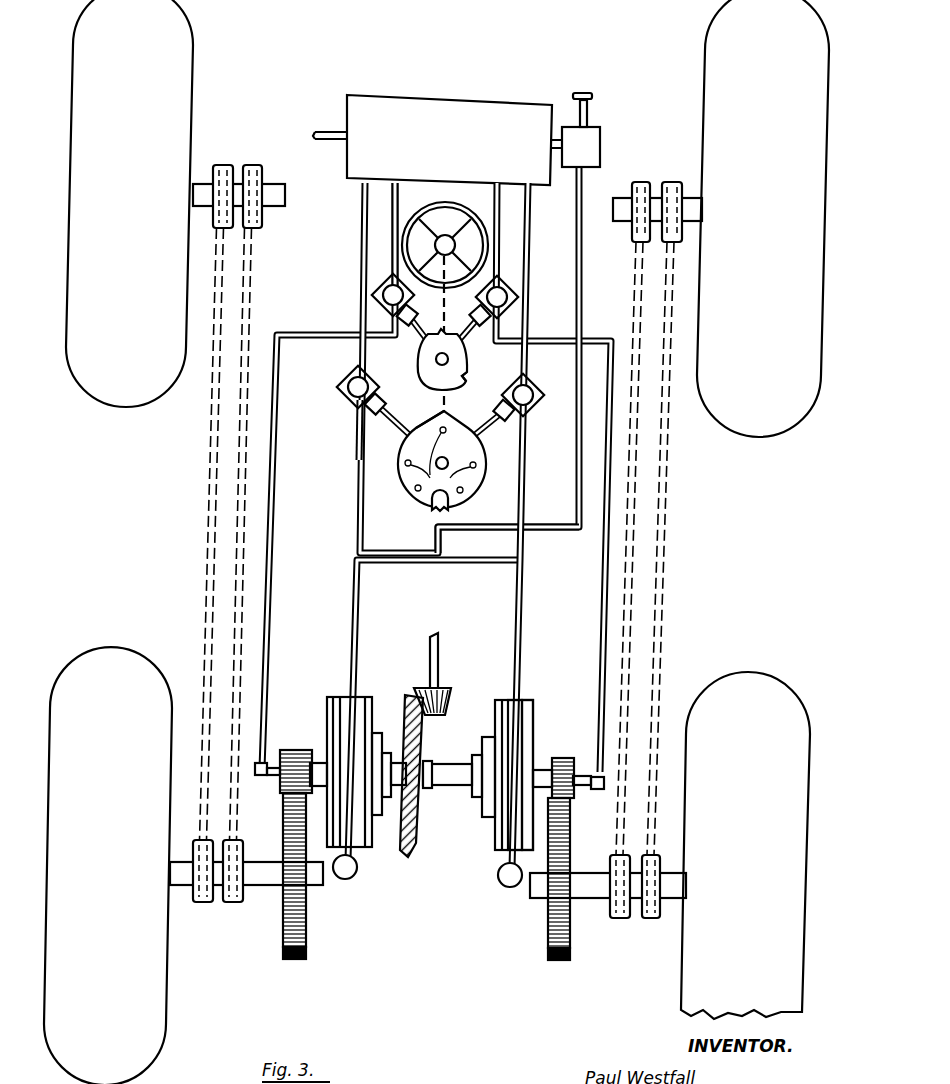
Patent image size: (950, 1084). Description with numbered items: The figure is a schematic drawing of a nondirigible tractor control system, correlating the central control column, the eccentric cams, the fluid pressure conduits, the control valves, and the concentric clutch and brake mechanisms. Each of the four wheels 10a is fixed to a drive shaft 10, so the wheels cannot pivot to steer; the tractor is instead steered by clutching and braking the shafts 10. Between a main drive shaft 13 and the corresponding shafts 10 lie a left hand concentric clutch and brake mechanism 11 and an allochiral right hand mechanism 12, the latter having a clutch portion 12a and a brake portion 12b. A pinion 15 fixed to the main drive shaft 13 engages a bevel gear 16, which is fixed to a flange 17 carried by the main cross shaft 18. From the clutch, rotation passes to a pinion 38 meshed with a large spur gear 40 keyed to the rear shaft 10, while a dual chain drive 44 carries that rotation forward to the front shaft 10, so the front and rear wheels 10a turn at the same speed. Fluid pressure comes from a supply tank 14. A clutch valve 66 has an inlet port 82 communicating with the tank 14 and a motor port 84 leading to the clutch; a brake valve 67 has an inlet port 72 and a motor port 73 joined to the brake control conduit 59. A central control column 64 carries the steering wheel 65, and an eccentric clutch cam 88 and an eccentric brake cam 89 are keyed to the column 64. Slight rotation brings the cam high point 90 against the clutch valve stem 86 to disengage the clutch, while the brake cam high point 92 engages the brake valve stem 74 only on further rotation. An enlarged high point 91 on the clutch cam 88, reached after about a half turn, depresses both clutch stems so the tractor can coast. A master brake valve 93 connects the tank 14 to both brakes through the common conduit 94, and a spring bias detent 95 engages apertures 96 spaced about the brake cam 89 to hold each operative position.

The wheel 10a is at (178, 47).
The drive shaft 10 is at (275, 195).
The dual chain drive 44 is at (238, 590).
The fluid pressure storage or supply tank 14 is at (405, 108).
The master brake valve 93 is at (590, 126).
The motor port 84 is at (308, 328).
The inlet port 82 is at (398, 207).
The inlet port 72 is at (355, 350).
The common conduit 94 is at (540, 533).
The brake control conduit 59 is at (350, 616).
The motor port 73 is at (347, 406).
The steering wheel 65 is at (484, 230).
The central control column 64 is at (448, 403).
The valve stem 86 is at (417, 332).
The cam high point 90 is at (458, 334).
The valve stem 74 is at (394, 428).
The clutch valve 66 is at (409, 294).
The brake valve 67 is at (380, 390).
The eccentric clutch cam 88 is at (458, 365).
The enlarged cam high point 91 is at (464, 383).
The eccentric brake cam 89 is at (481, 444).
The brake cam high point 92 is at (433, 420).
The apertures 96 is at (440, 460).
The spring bias detent 95 is at (426, 506).
The main drive shaft 13 is at (440, 648).
The pinion 15 is at (452, 705).
The bevel gear 16 is at (418, 845).
The flange 17 is at (427, 759).
The main cross shaft 18 is at (450, 768).
The left hand concentric clutch and brake mechanism 11 is at (377, 695).
The right hand concentric clutch and brake mechanism 12 is at (532, 692).
The clutch portion 12a is at (536, 744).
The brake portion 12b is at (524, 724).
The pinion 38 is at (296, 750).
The large spur gear 40 is at (306, 949).